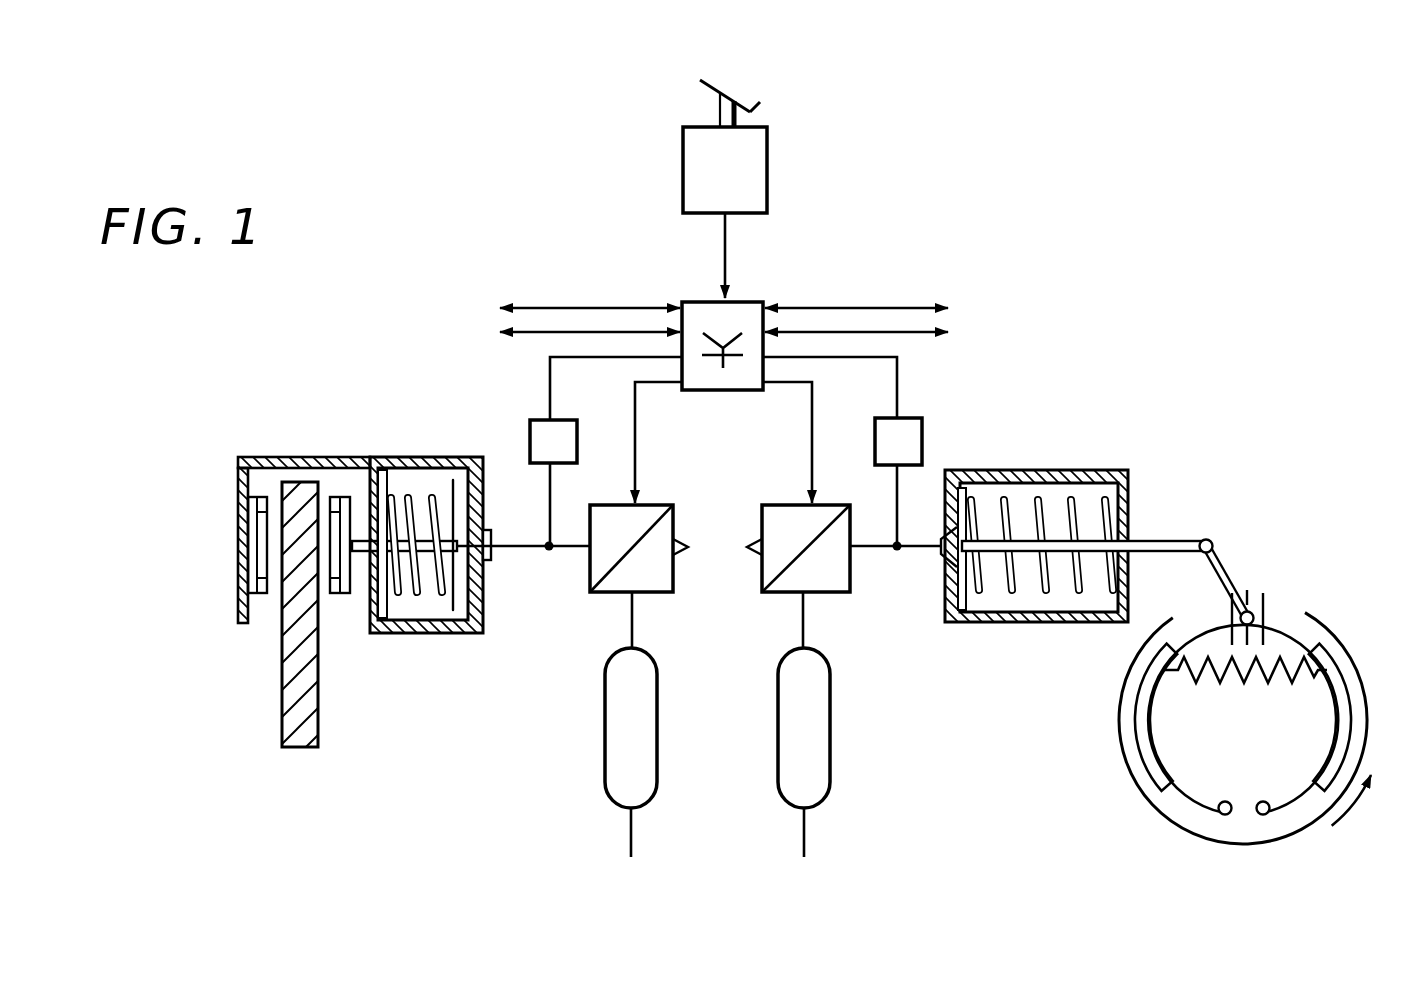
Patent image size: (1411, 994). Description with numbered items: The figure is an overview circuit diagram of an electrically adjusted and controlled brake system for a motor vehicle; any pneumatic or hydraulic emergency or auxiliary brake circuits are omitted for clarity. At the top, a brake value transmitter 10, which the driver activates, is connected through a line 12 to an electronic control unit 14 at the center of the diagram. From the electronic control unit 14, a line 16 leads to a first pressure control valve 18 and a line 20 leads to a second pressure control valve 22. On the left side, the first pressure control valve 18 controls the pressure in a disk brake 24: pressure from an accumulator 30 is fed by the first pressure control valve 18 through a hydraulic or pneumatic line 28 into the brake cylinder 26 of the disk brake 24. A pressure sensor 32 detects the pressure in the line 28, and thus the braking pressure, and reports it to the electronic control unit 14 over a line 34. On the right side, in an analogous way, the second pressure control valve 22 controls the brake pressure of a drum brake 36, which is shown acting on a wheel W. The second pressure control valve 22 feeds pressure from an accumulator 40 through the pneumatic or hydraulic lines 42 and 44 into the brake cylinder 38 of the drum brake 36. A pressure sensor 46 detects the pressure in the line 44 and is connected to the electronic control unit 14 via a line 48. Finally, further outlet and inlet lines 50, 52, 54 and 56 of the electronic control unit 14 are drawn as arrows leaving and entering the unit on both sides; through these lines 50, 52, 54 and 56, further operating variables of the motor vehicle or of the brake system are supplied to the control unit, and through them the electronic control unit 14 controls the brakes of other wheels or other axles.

The brake value transmitter 10 is at (794, 124).
The line 12 is at (727, 232).
The electronic control unit 14 is at (763, 303).
The line 16 is at (648, 432).
The first pressure control valve 18 is at (686, 493).
The line 20 is at (812, 440).
The second pressure control valve 22 is at (862, 490).
The disk brake 24 is at (387, 648).
The brake cylinder 26 is at (417, 645).
The hydraulic or pneumatic line 28 is at (530, 547).
The accumulator 30 is at (657, 735).
The pressure sensor 32 is at (530, 423).
The line 34 is at (551, 390).
The drum brake 36 is at (1218, 523).
The brake cylinder 38 is at (1024, 464).
The accumulator 40 is at (841, 722).
The pneumatic or hydraulic line 42 is at (803, 620).
The pneumatic or hydraulic line 44 is at (920, 550).
The pressure sensor 46 is at (923, 433).
The line 48 is at (898, 390).
The outlet and inlet line 50 is at (535, 308).
The outlet and inlet line 52 is at (523, 337).
The outlet and inlet line 54 is at (895, 308).
The outlet and inlet line 56 is at (923, 337).
The wheel with drum brake W is at (1258, 717).